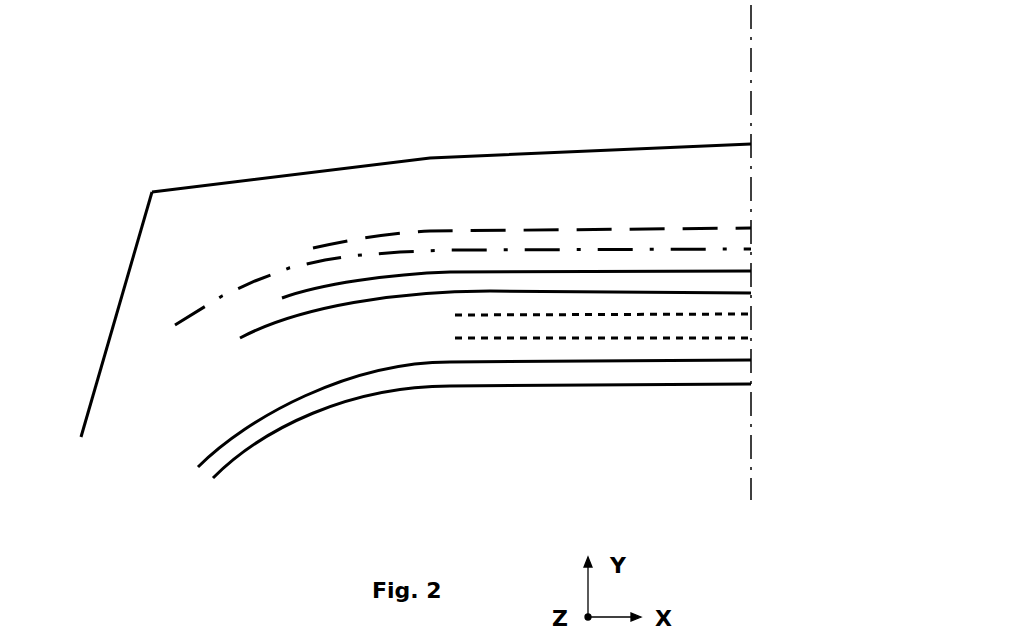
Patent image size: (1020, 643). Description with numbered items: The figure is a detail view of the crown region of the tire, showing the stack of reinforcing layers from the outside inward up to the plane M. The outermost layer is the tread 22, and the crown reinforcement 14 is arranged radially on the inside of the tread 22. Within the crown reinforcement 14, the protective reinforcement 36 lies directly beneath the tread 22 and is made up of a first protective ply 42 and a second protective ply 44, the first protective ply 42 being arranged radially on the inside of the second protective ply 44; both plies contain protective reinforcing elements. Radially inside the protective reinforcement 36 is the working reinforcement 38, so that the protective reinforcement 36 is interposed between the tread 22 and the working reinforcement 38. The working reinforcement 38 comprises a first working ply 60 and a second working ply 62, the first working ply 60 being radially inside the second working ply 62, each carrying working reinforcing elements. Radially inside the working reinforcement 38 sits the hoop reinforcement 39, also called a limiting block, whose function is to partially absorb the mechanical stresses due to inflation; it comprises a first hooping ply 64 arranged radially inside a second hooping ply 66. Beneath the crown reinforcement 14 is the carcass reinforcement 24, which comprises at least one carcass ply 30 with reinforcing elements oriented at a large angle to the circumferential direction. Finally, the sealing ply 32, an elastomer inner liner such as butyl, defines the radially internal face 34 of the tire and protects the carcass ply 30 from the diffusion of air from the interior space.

The crown reinforcement 14 is at (622, 176).
The tread 22 is at (378, 141).
The carcass reinforcement 24 is at (207, 431).
The carcass ply 30 is at (197, 466).
The sealing ply 32 is at (342, 422).
The radially internal face 34 is at (263, 445).
The protective reinforcement 36 is at (269, 250).
The working reinforcement 38 is at (244, 311).
The hoop reinforcement 39 is at (423, 329).
The first protective ply 42 is at (362, 257).
The second protective ply 44 is at (328, 243).
The first working ply 60 is at (492, 291).
The second working ply 62 is at (450, 271).
The first hooping ply 64 is at (558, 340).
The second hooping ply 66 is at (518, 318).
The mid-plane M is at (751, 448).